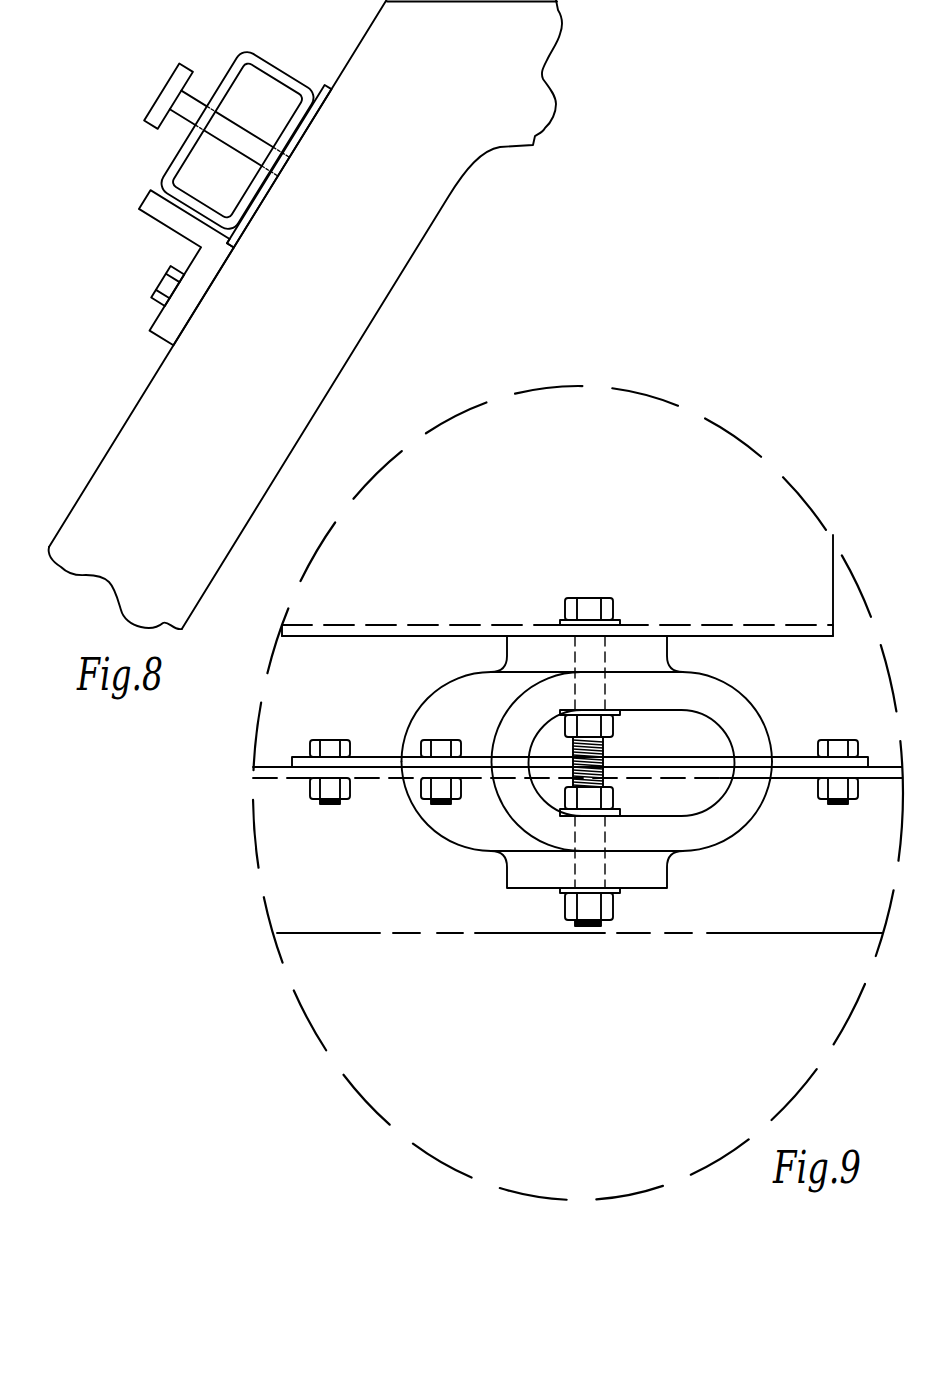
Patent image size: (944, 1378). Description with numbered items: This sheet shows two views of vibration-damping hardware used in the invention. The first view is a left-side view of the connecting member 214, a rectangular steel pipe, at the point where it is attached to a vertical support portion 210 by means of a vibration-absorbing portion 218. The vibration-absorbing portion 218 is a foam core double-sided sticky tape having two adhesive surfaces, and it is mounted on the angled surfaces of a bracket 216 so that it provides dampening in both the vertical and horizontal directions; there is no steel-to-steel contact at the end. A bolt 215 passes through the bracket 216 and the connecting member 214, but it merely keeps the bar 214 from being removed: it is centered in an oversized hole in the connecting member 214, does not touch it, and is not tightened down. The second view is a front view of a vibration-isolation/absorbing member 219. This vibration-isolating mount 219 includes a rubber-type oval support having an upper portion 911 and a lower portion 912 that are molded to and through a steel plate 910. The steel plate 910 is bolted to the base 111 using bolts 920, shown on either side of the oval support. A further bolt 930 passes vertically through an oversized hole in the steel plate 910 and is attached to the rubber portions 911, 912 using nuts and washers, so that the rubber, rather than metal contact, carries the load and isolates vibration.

In FIG. 8, the vertical support portion 210 is at (142, 393).
In FIG. 8, the connecting member 214 is at (231, 61).
In FIG. 8, the bolt 215 is at (162, 91).
In FIG. 8, the bracket 216 is at (168, 227).
In FIG. 8, the vibration-absorbing portion 218 is at (322, 90).
In FIG. 9, the vibration-isolation/absorbing member 219 is at (738, 679).
In FIG. 9, the upper portion 911 is at (440, 680).
In FIG. 9, the lower portion 912 is at (465, 838).
In FIG. 9, the bolt 930 is at (587, 598).
In FIG. 9, the bolts 920 is at (329, 740).
In FIG. 9, the steel plate 910 is at (362, 764).
In FIG. 9, the base 111 is at (270, 772).